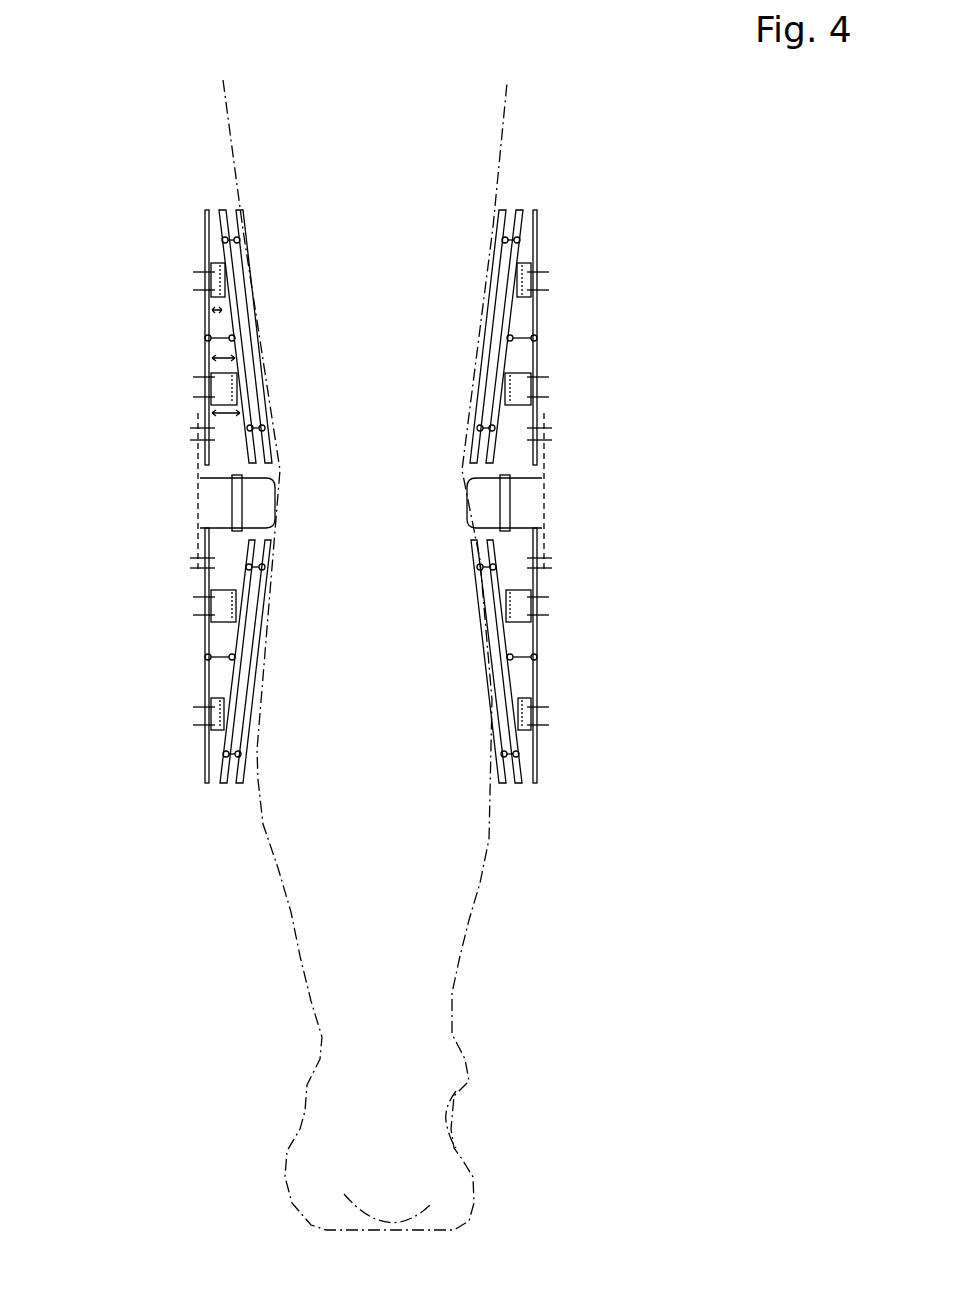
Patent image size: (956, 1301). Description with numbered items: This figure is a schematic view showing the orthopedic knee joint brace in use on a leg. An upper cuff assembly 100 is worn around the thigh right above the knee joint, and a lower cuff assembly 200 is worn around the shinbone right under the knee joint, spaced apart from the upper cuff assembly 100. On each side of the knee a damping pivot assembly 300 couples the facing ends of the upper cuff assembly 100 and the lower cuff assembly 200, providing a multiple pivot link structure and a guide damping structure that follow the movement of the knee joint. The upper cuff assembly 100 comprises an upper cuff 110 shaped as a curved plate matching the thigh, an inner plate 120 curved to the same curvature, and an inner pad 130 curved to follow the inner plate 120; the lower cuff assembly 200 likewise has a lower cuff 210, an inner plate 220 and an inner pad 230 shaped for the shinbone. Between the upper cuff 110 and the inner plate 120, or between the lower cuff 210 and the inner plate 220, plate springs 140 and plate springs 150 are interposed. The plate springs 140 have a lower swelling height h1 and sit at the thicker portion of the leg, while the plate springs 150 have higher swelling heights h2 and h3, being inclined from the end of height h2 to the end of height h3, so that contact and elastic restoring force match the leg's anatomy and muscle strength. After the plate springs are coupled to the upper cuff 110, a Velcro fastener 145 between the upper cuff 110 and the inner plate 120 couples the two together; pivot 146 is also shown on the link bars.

The upper cuff assembly 100 is at (568, 270).
The upper cuff 110 is at (207, 210).
The inner plate 120 is at (222, 211).
The inner pad 130 is at (239, 211).
The plate spring 140 is at (212, 264).
The Velcro fastener 145 is at (212, 334).
The pivot joint 146 is at (240, 238).
The plate spring 150 is at (210, 385).
The swelling height h1 is at (207, 283).
The swelling height h2 is at (207, 341).
The swelling height h3 is at (225, 416).
The lower cuff assembly 200 is at (557, 648).
The lower cuff 210 is at (207, 784).
The inner plate 220 is at (222, 785).
The inner pad 230 is at (240, 785).
The damping pivot assembly 300 is at (559, 499).